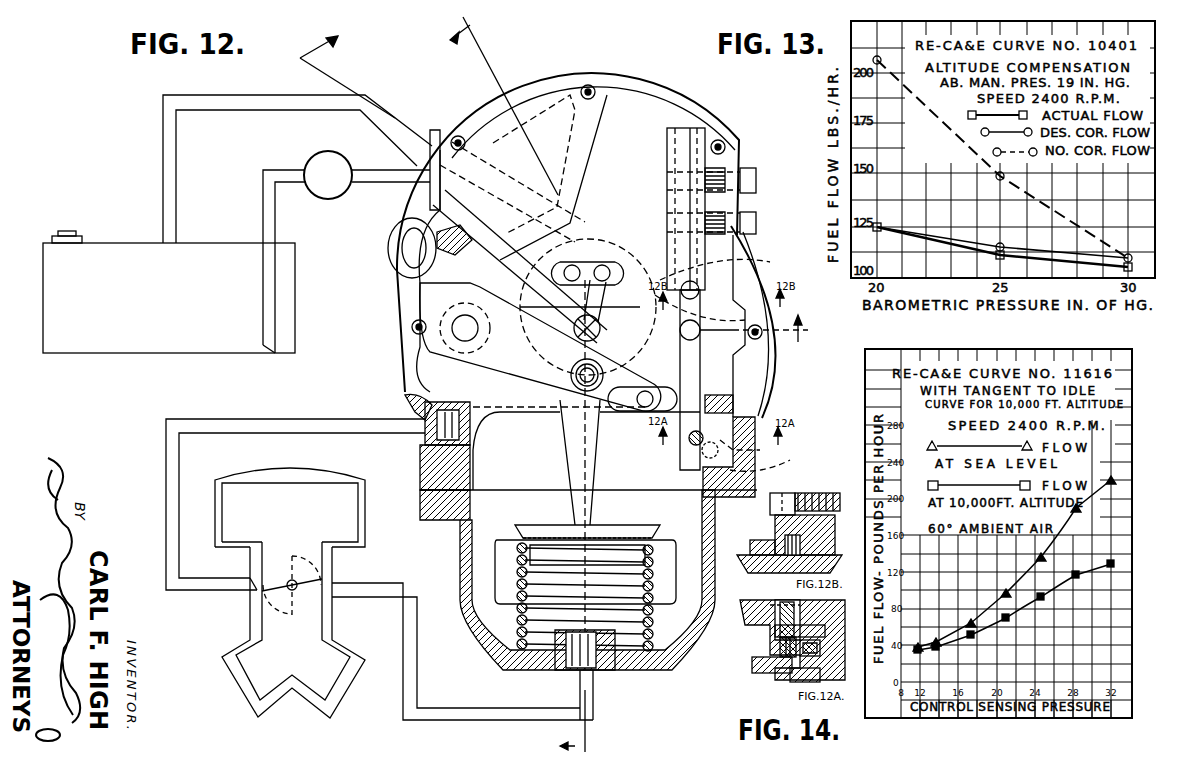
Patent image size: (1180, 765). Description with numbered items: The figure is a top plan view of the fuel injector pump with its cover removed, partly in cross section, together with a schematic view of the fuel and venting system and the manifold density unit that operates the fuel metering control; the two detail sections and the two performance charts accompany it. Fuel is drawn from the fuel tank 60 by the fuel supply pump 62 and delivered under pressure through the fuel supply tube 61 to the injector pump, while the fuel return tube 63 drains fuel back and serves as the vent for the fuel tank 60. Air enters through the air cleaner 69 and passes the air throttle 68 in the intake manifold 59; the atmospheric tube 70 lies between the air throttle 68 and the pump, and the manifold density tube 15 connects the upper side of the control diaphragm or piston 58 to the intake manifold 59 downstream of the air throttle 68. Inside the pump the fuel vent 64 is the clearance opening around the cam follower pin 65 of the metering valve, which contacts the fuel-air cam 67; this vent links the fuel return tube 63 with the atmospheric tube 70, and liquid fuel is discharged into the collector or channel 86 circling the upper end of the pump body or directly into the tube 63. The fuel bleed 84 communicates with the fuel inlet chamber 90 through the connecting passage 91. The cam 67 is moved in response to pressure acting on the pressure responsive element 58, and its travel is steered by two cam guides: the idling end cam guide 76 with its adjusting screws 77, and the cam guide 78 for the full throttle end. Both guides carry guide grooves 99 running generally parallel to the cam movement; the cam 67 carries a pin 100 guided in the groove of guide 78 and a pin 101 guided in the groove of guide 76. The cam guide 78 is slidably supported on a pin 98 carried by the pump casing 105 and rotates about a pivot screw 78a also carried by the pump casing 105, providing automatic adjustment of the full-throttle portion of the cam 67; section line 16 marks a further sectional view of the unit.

In FIG. 12, the control diaphragm or piston 58 is at (653, 544).
In FIG. 12, the intake manifold 59 is at (332, 628).
In FIG. 12, the fuel tank 60 is at (110, 342).
In FIG. 12, the fuel supply tube 61 is at (273, 216).
In FIG. 12, the fuel supply pump 62 is at (327, 190).
In FIG. 12, the fuel return tube 63 is at (163, 143).
In FIG. 12, the fuel vent 64 is at (575, 262).
In FIG. 12, the cam follower pin 65 is at (606, 270).
In FIG. 12, the fuel-air cam 67 is at (628, 443).
In FIG. 12B, the fuel-air cam 67 is at (735, 550).
In FIG. 12A, the fuel-air cam 67 is at (752, 665).
In FIG. 12, the air throttle 68 is at (264, 598).
In FIG. 12, the air cleaner 69 is at (348, 522).
In FIG. 12, the atmospheric tube 70 is at (234, 418).
In FIG. 12, the idling end cam guide 76 is at (664, 156).
In FIG. 12B, the idling end cam guide 76 is at (776, 499).
In FIG. 12, the adjusting screws 77 is at (757, 184).
In FIG. 12, the cam guide 78 is at (686, 360).
In FIG. 12B, the cam guide 78 is at (820, 493).
In FIG. 12A, the cam guide 78 is at (752, 644).
In FIG. 12, the pivot screw 78a is at (694, 447).
In FIG. 12A, the pivot screw 78a is at (782, 607).
In FIG. 12, the fuel bleed 84 is at (588, 306).
In FIG. 12, the collector or channel 86 is at (512, 352).
In FIG. 12, the fuel inlet chamber 90 is at (505, 110).
In FIG. 12, the connecting passage 91 is at (372, 248).
In FIG. 12, the pin 98 is at (765, 392).
In FIG. 12A, the pin 98 is at (770, 633).
In FIG. 12, the guide grooves 99 is at (667, 135).
In FIG. 12B, the guide grooves 99 is at (778, 538).
In FIG. 12A, the guide grooves 99 is at (765, 672).
In FIG. 12, the pin 100 is at (777, 465).
In FIG. 12A, the pin 100 is at (785, 682).
In FIG. 12, the pin 101 is at (770, 264).
In FIG. 12A, the pin 101 is at (766, 591).
In FIG. 12, the pump casing 105 is at (641, 85).
In FIG. 12A, the pump casing 105 is at (808, 600).
In FIG. 12, the manifold density tube 15 is at (414, 688).
In FIG. 12, the section line 16 is at (549, 206).